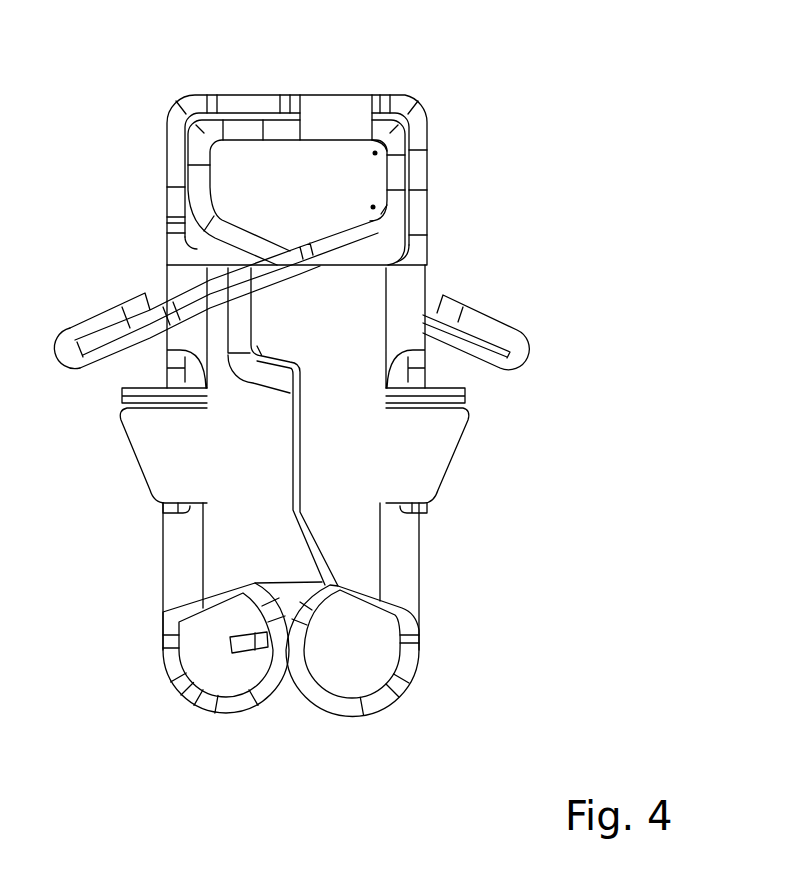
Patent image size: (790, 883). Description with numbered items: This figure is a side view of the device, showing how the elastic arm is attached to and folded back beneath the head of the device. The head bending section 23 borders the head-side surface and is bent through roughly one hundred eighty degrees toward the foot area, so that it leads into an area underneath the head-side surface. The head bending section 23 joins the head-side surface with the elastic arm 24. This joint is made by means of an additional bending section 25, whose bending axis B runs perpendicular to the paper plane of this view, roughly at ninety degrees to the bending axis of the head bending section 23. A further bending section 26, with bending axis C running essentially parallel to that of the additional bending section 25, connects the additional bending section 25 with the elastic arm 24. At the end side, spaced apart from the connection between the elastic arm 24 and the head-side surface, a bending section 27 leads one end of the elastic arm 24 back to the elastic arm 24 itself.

The head bending section 23 is at (343, 117).
The elastic arm 24 is at (190, 302).
The additional bending section 25 is at (393, 137).
The another bending section 26 is at (385, 212).
The bending section 27 is at (67, 353).